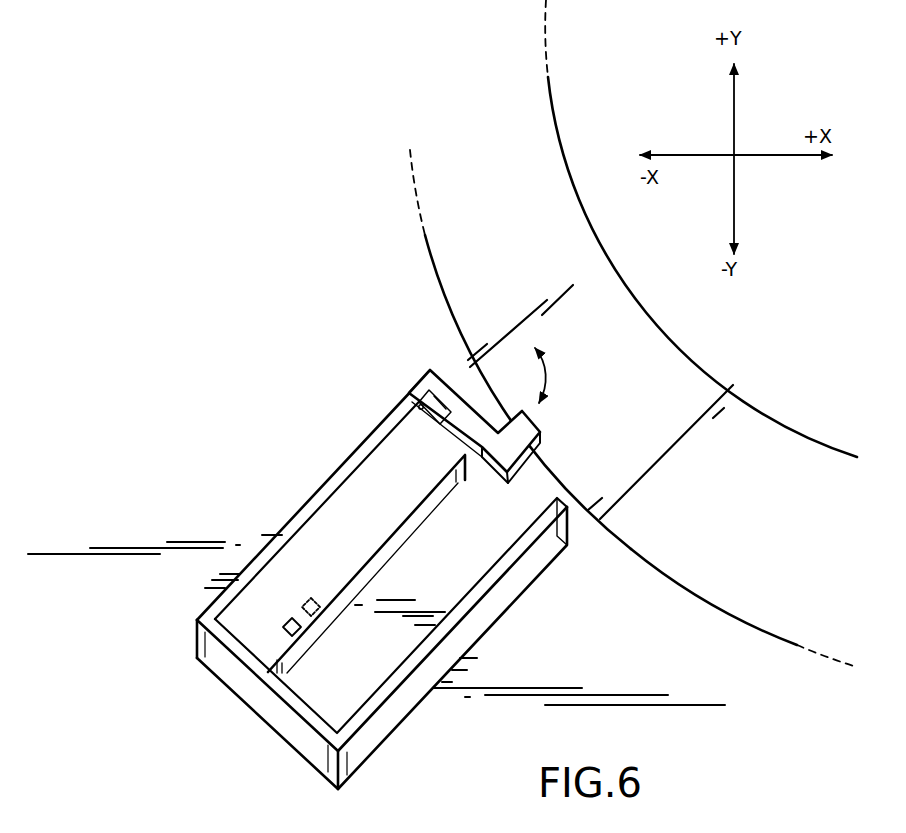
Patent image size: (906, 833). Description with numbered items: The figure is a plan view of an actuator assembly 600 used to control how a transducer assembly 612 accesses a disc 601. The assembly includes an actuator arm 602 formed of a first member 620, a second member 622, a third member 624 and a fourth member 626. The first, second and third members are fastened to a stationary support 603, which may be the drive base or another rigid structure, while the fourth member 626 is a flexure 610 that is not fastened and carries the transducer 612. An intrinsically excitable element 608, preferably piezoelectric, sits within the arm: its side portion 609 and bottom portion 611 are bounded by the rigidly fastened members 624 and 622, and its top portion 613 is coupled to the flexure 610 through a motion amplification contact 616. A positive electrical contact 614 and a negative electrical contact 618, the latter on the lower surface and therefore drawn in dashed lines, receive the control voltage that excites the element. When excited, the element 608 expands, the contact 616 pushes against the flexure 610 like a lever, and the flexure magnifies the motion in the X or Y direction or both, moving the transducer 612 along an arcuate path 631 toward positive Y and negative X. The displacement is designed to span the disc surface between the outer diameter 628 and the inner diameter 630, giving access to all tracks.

The actuator assembly 600 is at (250, 382).
The disc 601 is at (663, 397).
The actuator arm 602 is at (339, 581).
The stationary support 603 is at (512, 702).
The intrinsically excitable element 608 is at (306, 557).
The side portion 609 is at (378, 452).
The flexure 610 is at (479, 421).
The bottom portion 611 is at (196, 648).
The transducer assembly 612 is at (542, 428).
The top portion 613 is at (428, 416).
The positive electrical contact 614 is at (300, 638).
The motion amplification contact 616 is at (432, 368).
The negative electrical contact 618 is at (321, 609).
The first member 620 is at (393, 719).
The second member 622 is at (233, 666).
The third member 624 is at (212, 603).
The fourth member 626 is at (483, 460).
The outer diameter 628 is at (633, 547).
The inner diameter 630 is at (612, 254).
The arcuate path 631 is at (548, 380).